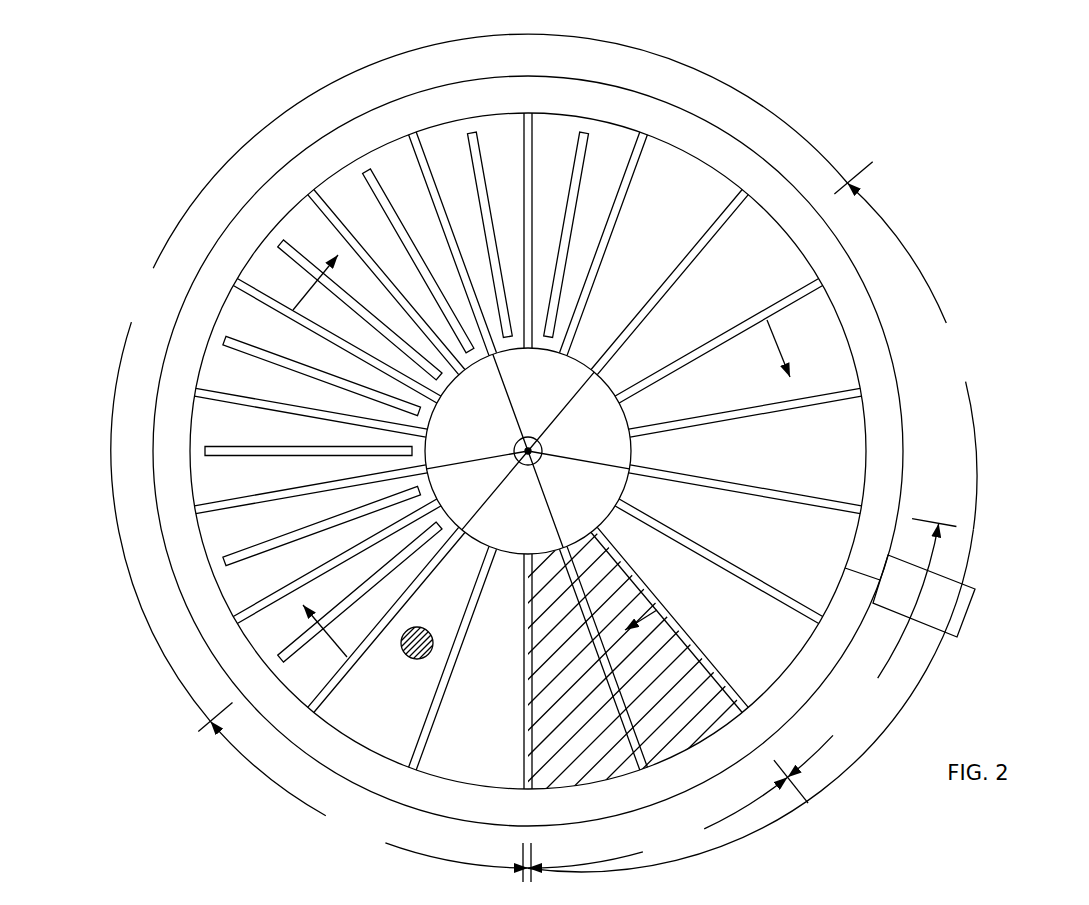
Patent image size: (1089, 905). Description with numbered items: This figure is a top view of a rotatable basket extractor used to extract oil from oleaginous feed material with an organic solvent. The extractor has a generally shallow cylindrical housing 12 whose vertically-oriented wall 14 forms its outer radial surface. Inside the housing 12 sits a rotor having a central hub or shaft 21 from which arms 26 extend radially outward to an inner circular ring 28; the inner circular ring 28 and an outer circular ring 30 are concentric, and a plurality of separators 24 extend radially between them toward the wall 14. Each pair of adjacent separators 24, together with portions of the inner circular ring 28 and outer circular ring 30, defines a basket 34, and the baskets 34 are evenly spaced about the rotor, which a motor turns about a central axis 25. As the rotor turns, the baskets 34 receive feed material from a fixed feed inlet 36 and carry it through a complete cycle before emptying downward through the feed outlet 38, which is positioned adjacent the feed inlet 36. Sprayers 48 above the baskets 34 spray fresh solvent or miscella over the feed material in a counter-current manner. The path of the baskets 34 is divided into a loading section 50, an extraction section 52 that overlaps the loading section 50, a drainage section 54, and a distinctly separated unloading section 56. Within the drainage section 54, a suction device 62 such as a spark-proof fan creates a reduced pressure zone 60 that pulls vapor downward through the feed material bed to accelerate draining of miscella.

The housing 12 is at (876, 298).
The wall 14 is at (902, 424).
The central hub or shaft 21 is at (543, 447).
The separators 24 is at (627, 200).
The central axis 25 is at (527, 457).
The arms 26 is at (553, 419).
The inner circular ring 28 is at (604, 530).
The outer circular ring 30 is at (331, 176).
The baskets 34 is at (715, 391).
The feed inlet 36 is at (410, 657).
The feed outlet 38 is at (554, 703).
The sprayers 48 is at (487, 184).
The loading section 50 is at (218, 797).
The extraction section 52 is at (549, 577).
The drainage section 54 is at (906, 346).
The unloading section 56 is at (668, 814).
The reduced pressure zone 60 is at (863, 650).
The suction device 62 is at (970, 610).